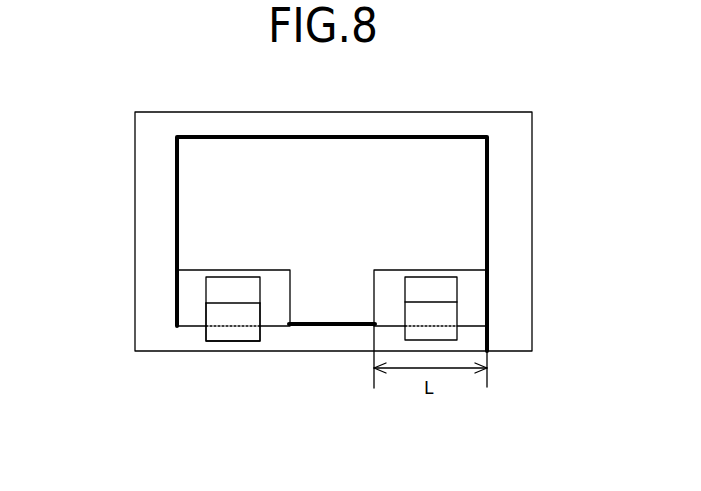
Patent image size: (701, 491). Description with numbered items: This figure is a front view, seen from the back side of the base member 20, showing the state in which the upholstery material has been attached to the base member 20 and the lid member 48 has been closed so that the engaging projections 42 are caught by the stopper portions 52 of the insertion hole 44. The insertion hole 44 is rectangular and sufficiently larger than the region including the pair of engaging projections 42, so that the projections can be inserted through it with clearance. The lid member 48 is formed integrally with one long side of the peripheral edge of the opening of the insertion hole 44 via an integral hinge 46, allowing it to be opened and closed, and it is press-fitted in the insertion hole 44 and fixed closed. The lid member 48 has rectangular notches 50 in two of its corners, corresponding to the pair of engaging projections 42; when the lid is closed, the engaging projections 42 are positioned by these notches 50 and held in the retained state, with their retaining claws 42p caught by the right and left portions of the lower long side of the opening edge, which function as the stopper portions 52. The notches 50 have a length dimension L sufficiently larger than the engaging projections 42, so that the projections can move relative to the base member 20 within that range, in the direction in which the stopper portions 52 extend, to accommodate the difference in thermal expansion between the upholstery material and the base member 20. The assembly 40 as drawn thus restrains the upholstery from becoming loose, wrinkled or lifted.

The base member 20 is at (503, 124).
The electronic component 40 is at (299, 217).
The engaging projections 42 is at (220, 288).
The retaining claws 42p is at (227, 334).
The insertion hole 44 is at (334, 322).
The integral hinge 46 is at (358, 134).
The lid member 48 is at (215, 172).
The notches 50 is at (285, 309).
The stopper portions 52 is at (190, 337).